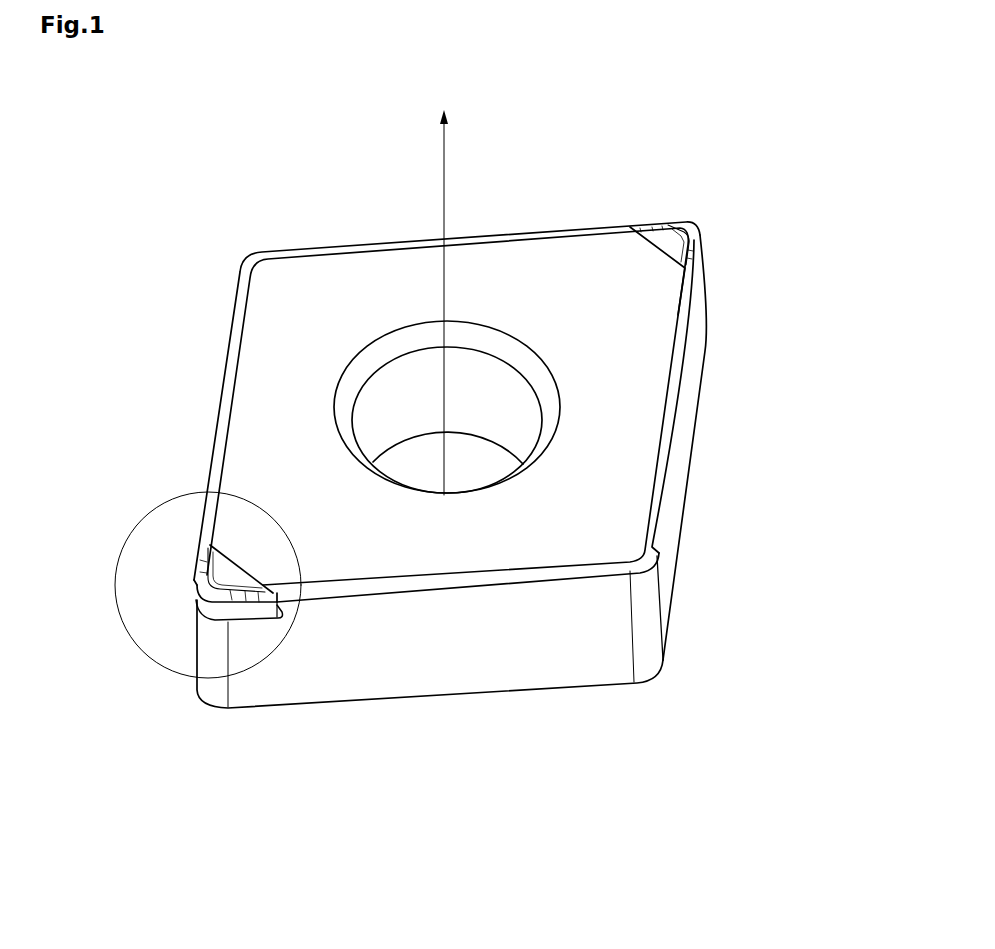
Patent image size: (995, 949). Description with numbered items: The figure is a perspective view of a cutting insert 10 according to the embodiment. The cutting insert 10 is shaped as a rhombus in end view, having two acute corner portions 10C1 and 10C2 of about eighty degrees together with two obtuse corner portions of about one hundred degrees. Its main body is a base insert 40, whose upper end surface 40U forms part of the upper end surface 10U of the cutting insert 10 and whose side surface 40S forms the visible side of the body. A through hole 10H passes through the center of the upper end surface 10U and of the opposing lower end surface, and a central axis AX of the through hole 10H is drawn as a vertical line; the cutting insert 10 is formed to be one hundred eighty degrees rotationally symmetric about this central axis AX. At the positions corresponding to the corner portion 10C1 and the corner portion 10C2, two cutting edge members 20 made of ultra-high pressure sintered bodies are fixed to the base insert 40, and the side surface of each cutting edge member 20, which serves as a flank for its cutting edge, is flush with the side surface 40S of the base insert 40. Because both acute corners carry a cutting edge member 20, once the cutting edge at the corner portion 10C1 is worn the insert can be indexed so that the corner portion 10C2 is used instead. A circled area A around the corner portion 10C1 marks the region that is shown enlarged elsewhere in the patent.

The cutting insert 10 is at (446, 809).
The through hole 10H is at (479, 318).
The upper end surface 10U is at (447, 379).
The upper end surface of base insert 40U is at (582, 253).
The side surface of base insert 40S is at (498, 667).
The base insert 40 is at (600, 741).
The cutting edge member 20 is at (152, 707).
The corner portion 10C1 is at (181, 599).
The corner portion 10C2 is at (706, 234).
The central axis AX is at (441, 201).
The area A is at (225, 494).